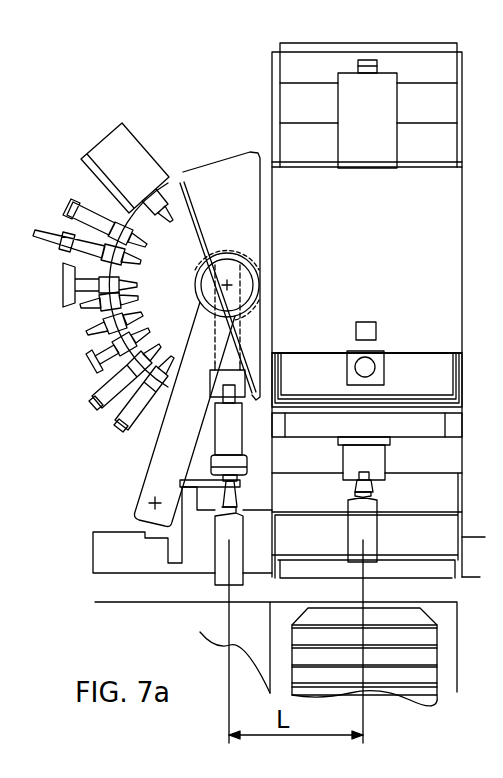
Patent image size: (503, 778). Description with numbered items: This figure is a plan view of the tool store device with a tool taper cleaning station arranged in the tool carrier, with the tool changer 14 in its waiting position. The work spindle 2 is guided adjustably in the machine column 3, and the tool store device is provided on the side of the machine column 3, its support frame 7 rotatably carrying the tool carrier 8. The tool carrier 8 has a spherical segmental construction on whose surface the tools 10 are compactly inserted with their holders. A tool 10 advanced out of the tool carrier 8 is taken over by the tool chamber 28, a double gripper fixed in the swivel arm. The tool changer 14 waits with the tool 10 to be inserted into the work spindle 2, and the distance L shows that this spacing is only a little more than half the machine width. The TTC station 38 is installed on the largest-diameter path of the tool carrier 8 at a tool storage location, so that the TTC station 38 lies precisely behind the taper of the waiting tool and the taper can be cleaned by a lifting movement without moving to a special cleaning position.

The machine column 3 is at (270, 100).
The support frame 7 is at (223, 182).
The tool carrier 8 is at (108, 313).
The tool 10 is at (213, 580).
The tool changer 14 is at (136, 457).
The work spindle 2 is at (376, 457).
The TTC station 38 is at (230, 447).
The tool chamber 28 is at (158, 545).